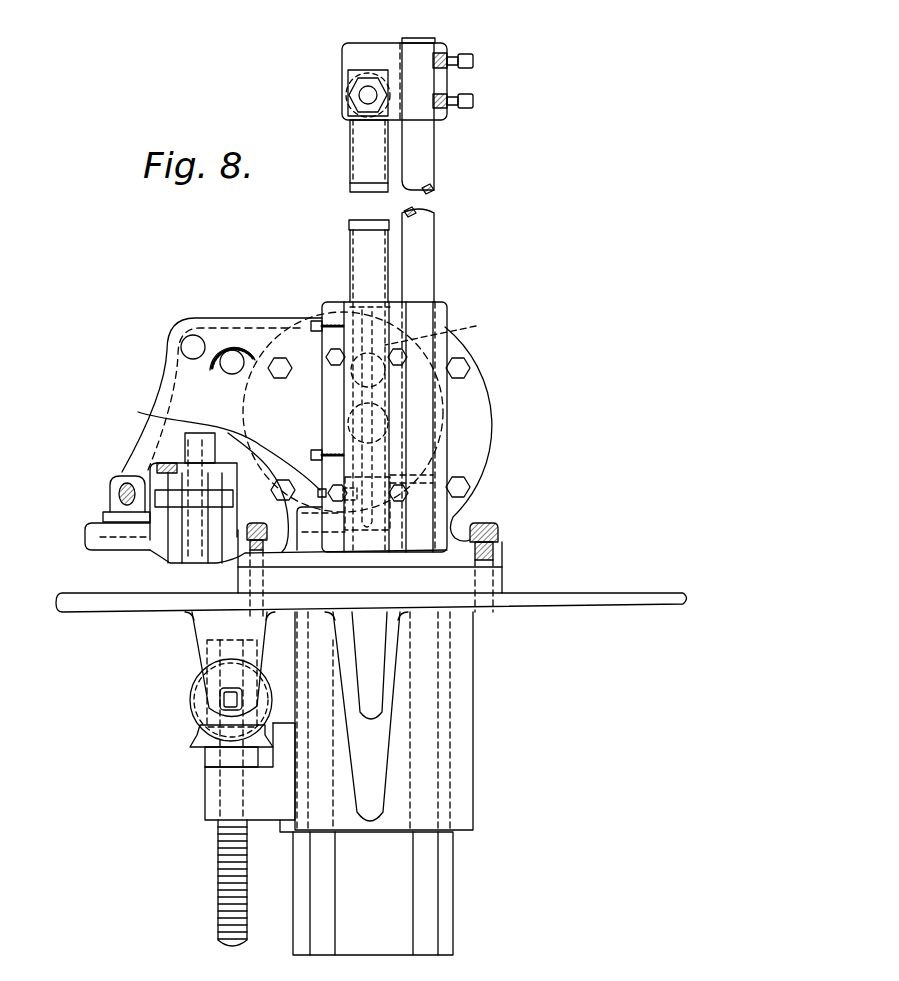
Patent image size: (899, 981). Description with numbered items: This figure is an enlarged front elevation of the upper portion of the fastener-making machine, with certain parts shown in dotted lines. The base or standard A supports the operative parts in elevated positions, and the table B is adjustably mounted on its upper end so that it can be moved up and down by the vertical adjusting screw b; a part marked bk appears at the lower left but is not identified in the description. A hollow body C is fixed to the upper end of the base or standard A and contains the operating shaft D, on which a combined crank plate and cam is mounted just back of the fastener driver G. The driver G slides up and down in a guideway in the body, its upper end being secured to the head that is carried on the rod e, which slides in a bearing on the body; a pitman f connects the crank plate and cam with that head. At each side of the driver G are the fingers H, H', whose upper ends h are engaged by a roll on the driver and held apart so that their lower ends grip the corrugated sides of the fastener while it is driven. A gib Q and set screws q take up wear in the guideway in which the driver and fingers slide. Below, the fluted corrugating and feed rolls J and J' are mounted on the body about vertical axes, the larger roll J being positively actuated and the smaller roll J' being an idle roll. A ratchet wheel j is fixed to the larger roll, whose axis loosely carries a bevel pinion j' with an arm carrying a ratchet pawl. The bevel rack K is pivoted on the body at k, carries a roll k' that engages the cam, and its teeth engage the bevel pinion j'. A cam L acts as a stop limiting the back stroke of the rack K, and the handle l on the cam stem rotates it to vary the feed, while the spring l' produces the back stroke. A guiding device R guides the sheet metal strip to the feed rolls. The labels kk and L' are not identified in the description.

The finger H' is at (421, 175).
The pitman f is at (360, 167).
The rod e is at (418, 187).
The fastener driver G is at (360, 184).
The finger H is at (413, 427).
The operating shaft D is at (405, 392).
The pin kk is at (386, 400).
The hollow body C is at (470, 432).
The upper ends of the fingers h is at (455, 521).
The roll k' is at (224, 570).
The handle l is at (222, 413).
The pivot k is at (155, 351).
The set screws q is at (340, 347).
The gib Q is at (365, 336).
The link L' is at (162, 384).
The fluted corrugating and feed roll J is at (137, 539).
The bevel rack K is at (157, 480).
The bevel pinion j' is at (90, 491).
The ratchet wheel j is at (89, 542).
The guiding device R is at (150, 498).
The idle roll J' is at (142, 586).
The cam L is at (220, 610).
The spring l' is at (211, 730).
The table B is at (530, 600).
The knob bk is at (202, 708).
The base or standard A is at (395, 888).
The vertical adjusting screw b is at (218, 880).